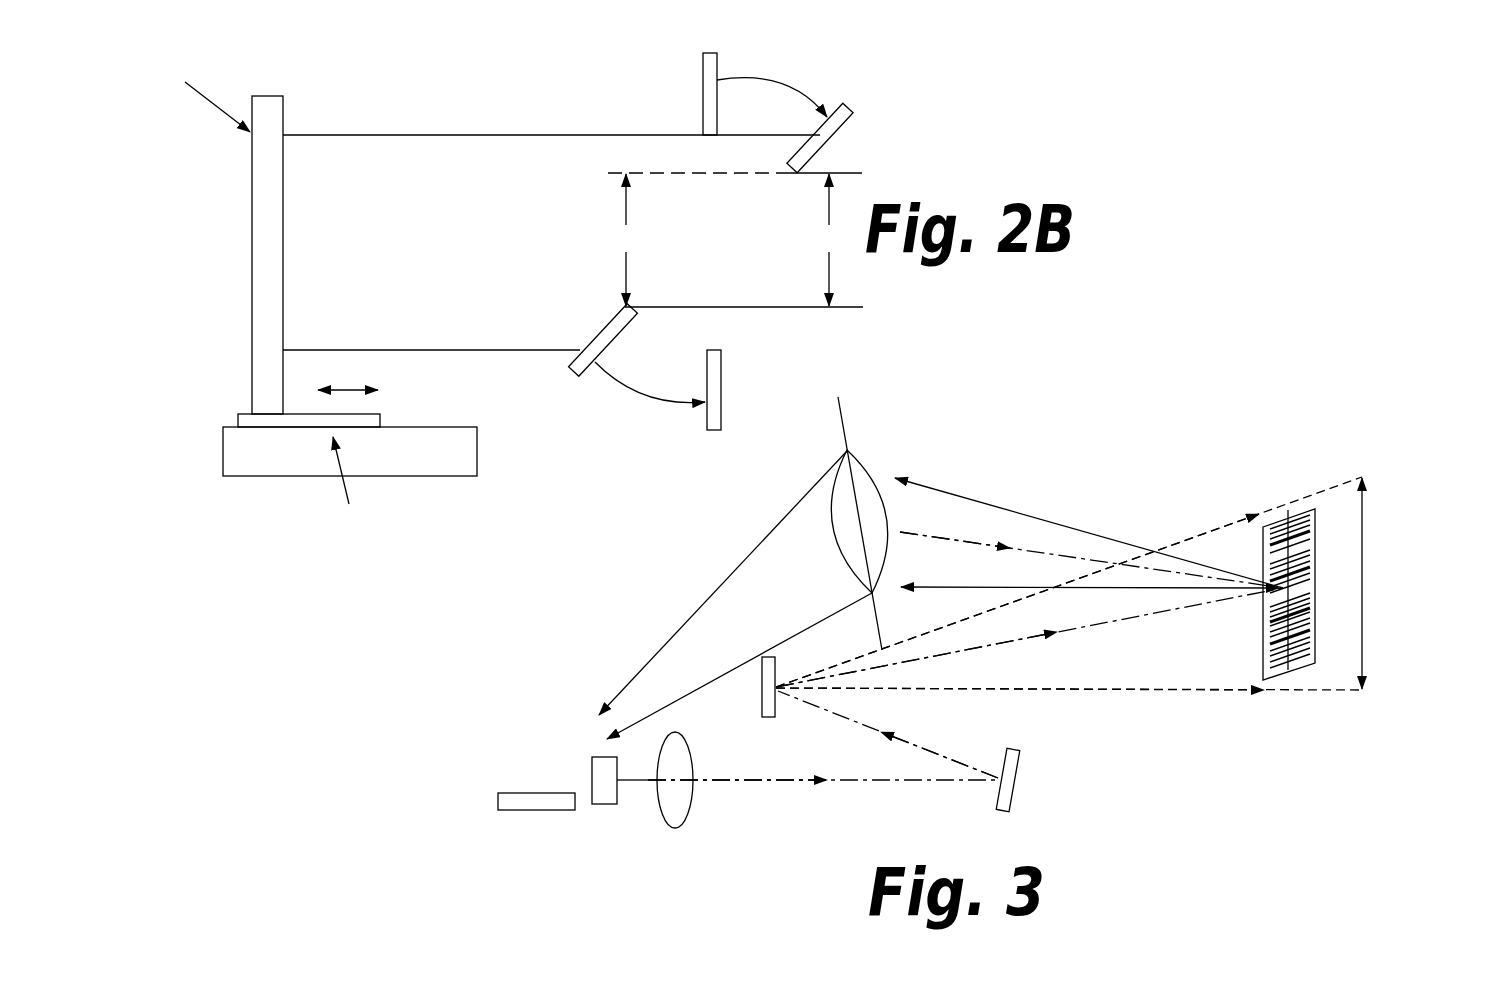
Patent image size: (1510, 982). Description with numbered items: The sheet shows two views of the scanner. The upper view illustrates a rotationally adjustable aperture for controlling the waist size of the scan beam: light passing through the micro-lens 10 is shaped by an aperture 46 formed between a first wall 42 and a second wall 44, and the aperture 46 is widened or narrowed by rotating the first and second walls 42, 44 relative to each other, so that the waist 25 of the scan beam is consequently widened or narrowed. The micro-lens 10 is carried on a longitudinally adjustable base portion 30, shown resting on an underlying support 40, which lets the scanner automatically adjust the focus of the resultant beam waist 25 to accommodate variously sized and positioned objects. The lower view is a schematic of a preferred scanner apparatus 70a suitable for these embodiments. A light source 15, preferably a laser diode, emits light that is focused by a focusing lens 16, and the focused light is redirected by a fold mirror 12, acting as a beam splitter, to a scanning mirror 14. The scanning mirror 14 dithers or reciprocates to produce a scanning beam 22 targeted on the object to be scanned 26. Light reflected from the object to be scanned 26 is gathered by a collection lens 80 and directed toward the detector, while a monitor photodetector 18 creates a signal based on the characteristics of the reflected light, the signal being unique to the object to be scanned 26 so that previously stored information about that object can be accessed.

In FIG. 2B, the micro-lens 10 is at (283, 108).
In FIG. 2B, the longitudinally adjustable base portion 30 is at (378, 413).
In FIG. 2B, the micro-actuator (comb drive) base 40 is at (451, 455).
In FIG. 2B, the second adjustable wall 44 is at (840, 118).
In FIG. 2B, the first adjustable wall 42 is at (613, 330).
In FIG. 2B, the aperture 46 is at (626, 240).
In FIG. 2B, the beam waist 25 is at (831, 240).
In FIG. 3, the collection lens 80 is at (978, 523).
In FIG. 3, the scanner system 70a is at (1189, 446).
In FIG. 3, the scanning mirror 14 is at (760, 690).
In FIG. 3, the scanning beam 22 is at (1133, 583).
In FIG. 3, the object to be scanned 26 is at (1270, 660).
In FIG. 3, the light source 15 is at (605, 805).
In FIG. 3, the focusing lens 16 is at (663, 822).
In FIG. 3, the photodetector 18 is at (477, 836).
In FIG. 3, the fold mirror 12 is at (1034, 758).